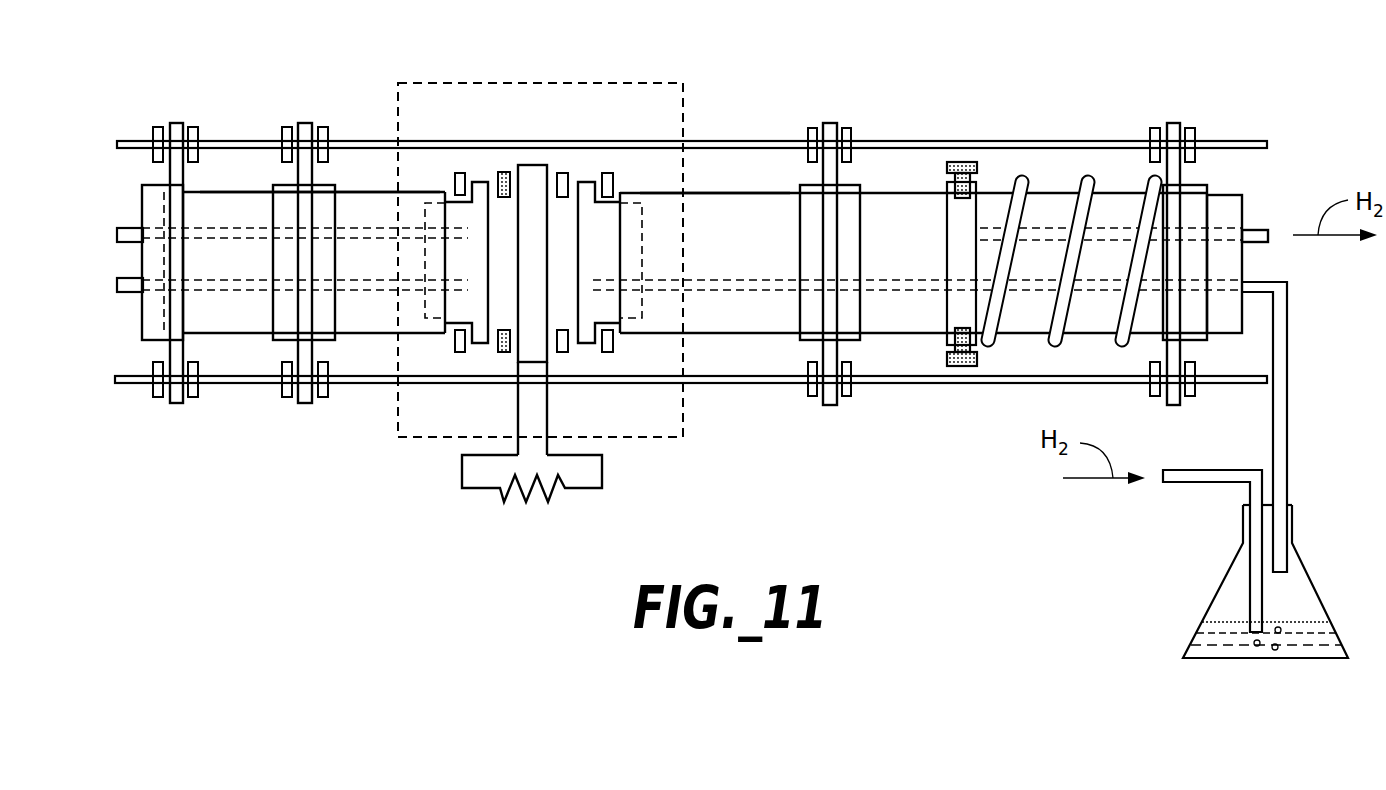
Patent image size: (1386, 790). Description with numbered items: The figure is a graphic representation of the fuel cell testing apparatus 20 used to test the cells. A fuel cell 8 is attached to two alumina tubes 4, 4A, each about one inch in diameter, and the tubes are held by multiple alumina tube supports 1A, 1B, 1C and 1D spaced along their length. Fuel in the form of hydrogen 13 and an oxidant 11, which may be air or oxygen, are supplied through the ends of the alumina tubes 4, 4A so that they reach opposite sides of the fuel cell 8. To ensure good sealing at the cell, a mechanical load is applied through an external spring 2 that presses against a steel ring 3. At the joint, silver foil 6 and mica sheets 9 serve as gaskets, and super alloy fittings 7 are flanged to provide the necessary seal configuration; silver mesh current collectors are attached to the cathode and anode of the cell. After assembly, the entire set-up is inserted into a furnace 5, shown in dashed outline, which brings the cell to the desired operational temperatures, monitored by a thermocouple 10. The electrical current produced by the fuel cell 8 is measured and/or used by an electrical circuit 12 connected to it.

The alumina tube support 1A is at (178, 123).
The alumina tube support 1B is at (305, 123).
The alumina tube support 1C is at (830, 123).
The alumina tube support 1D is at (1173, 123).
The external spring 2 is at (1032, 190).
The steel ring 3 is at (963, 162).
The alumina tube 4 is at (380, 192).
The alumina tube 4A is at (710, 192).
The furnace 5 is at (683, 100).
The silver foil 6 is at (477, 182).
The super alloy fitting 7 is at (458, 173).
The fuel cell 8 is at (537, 165).
The mica sheet 9 is at (503, 172).
The thermocouple 10 is at (117, 233).
The oxidant 11 is at (117, 283).
The electrical circuit 12 is at (575, 488).
The fuel 13 is at (1082, 480).
The fuel cell testing apparatus 20 is at (1067, 47).